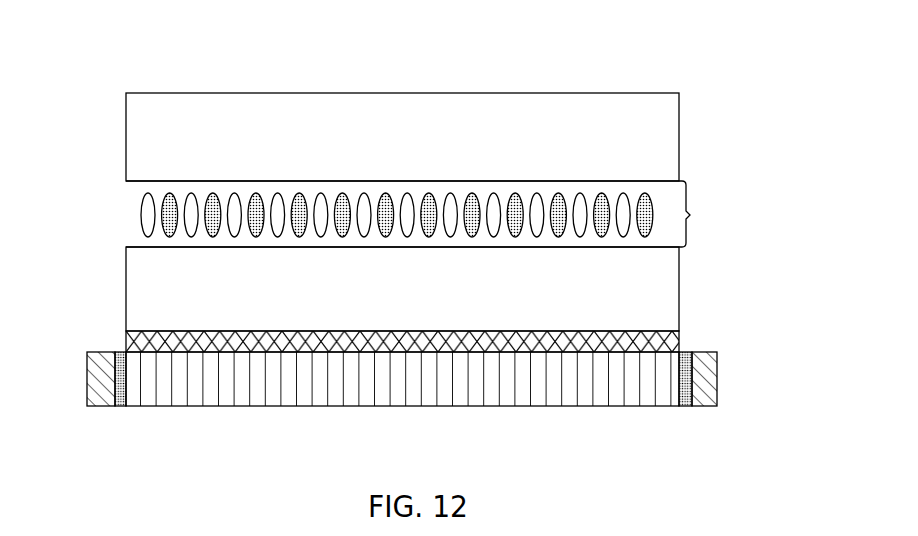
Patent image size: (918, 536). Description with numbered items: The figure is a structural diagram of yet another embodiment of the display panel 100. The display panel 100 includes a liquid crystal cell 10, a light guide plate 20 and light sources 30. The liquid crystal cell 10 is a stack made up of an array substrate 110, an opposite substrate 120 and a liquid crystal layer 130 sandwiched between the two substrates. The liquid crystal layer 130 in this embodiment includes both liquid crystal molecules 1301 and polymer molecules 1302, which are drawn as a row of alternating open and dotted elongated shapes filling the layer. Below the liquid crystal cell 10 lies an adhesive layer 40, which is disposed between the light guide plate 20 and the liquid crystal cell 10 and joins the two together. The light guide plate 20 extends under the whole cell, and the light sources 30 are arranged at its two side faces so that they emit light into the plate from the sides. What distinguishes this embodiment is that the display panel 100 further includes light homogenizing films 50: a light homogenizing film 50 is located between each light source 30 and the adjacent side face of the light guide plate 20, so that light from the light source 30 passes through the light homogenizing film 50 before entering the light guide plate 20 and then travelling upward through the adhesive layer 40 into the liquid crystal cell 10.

The display panel 100 is at (102, 37).
The liquid crystal cell 10 is at (736, 119).
The array substrate 110 is at (665, 306).
The opposite substrate 120 is at (672, 122).
The liquid crystal layer 130 is at (394, 213).
The liquid crystal molecules 1301 is at (146, 217).
The polymer molecules 1302 is at (170, 196).
The light guide plate 20 is at (641, 393).
The light source 30 is at (705, 359).
The adhesive layer 40 is at (679, 339).
The light homogenizing film 50 is at (693, 391).